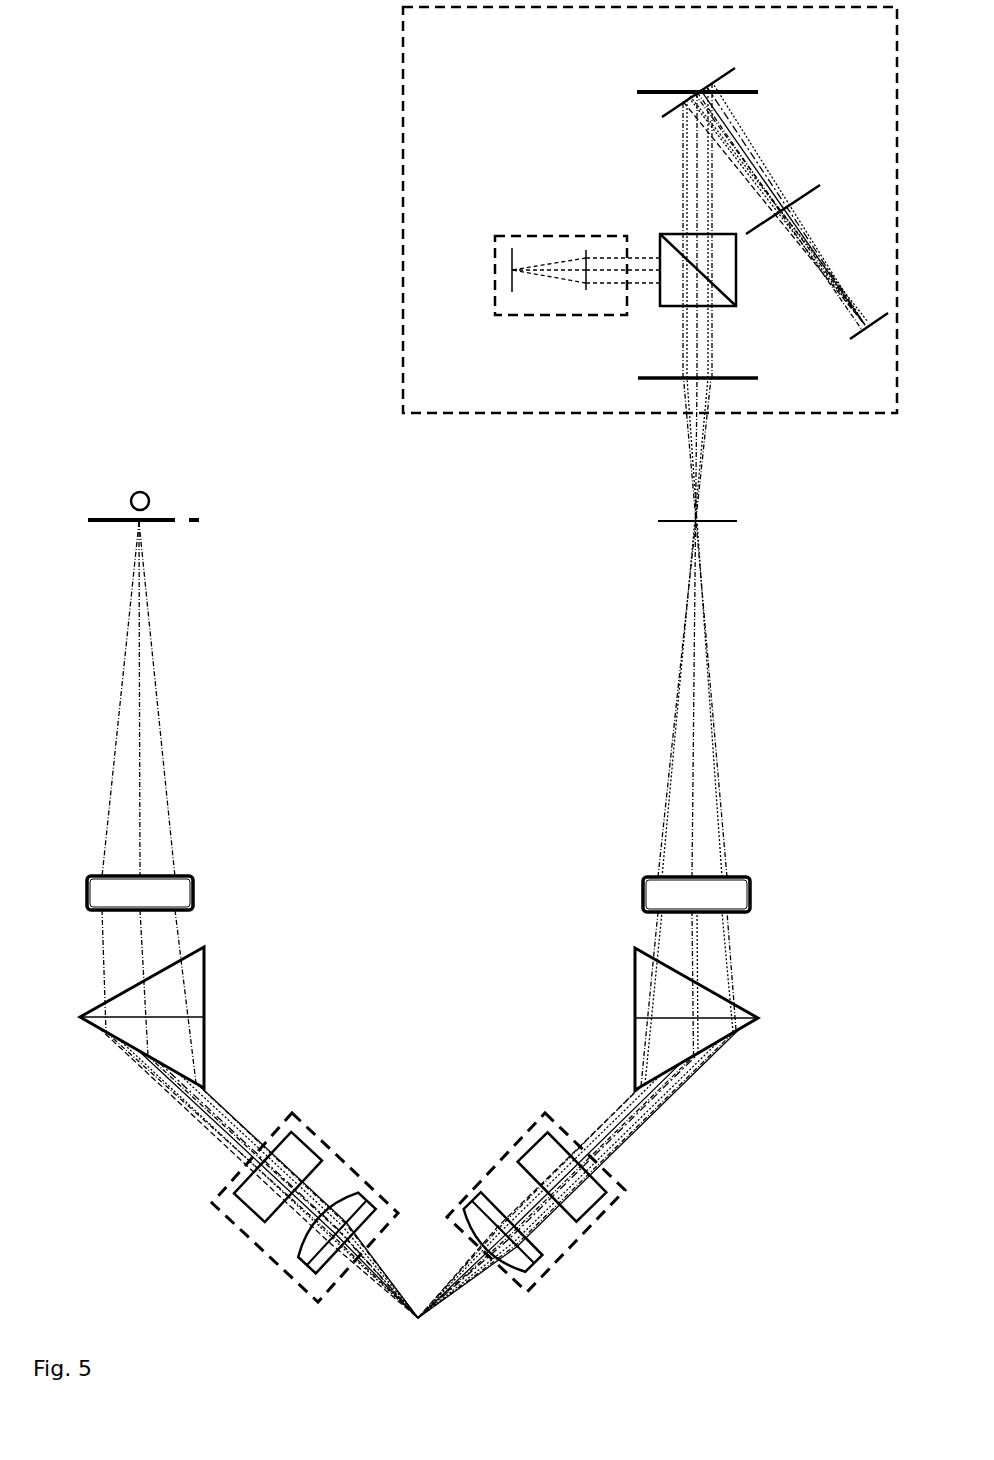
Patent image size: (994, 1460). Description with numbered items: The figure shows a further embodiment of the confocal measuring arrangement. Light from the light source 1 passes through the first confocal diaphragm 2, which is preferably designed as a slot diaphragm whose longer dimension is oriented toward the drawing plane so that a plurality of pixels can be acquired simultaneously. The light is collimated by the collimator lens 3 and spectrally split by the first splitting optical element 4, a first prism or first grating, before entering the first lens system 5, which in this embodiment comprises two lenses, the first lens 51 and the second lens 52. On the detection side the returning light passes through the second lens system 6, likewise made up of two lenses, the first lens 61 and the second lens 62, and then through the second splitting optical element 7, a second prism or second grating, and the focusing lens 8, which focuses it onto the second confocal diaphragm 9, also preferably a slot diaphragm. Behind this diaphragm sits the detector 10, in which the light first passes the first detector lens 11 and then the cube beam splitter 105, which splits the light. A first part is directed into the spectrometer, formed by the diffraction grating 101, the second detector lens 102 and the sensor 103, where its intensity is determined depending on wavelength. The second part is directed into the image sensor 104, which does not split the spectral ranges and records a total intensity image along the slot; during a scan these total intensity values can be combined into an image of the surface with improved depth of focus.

The light source 1 is at (130, 490).
The first confocal diaphragm 2 is at (88, 519).
The collimator lens 3 is at (193, 889).
The first splitting optical element 4 is at (80, 1017).
The first lens system 5 is at (295, 1214).
The first lens of first lens system 51 is at (243, 1201).
The second lens of first lens system 52 is at (295, 1255).
The second lens system 6 is at (559, 1207).
The first lens of second lens system 61 is at (605, 1203).
The second lens of second lens system 62 is at (536, 1265).
The second splitting optical element 7 is at (758, 1018).
The focusing lens 8 is at (750, 890).
The second confocal diaphragm 9 is at (660, 521).
The detector 10 is at (400, 133).
The first detector lens 11 is at (638, 378).
The spectrometer grating 101 is at (636, 88).
The second detector lens 102 is at (820, 185).
The sensor 103 is at (872, 325).
The image sensor 104 is at (530, 314).
The beam splitter 105 is at (660, 236).